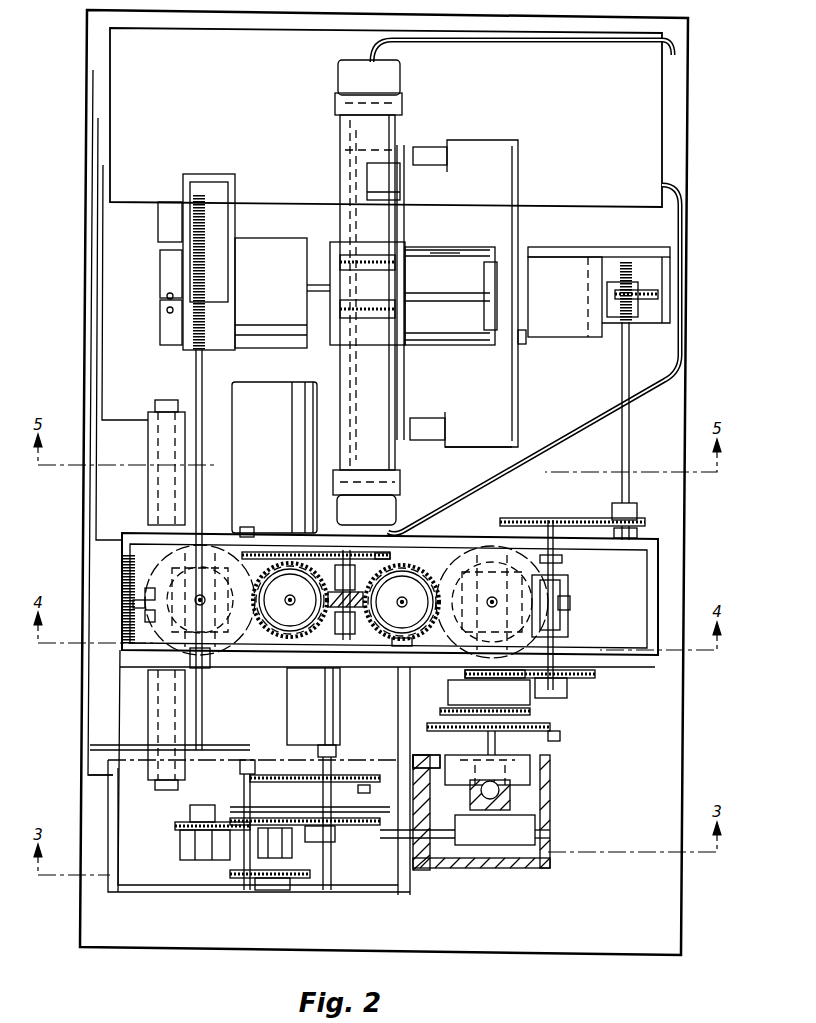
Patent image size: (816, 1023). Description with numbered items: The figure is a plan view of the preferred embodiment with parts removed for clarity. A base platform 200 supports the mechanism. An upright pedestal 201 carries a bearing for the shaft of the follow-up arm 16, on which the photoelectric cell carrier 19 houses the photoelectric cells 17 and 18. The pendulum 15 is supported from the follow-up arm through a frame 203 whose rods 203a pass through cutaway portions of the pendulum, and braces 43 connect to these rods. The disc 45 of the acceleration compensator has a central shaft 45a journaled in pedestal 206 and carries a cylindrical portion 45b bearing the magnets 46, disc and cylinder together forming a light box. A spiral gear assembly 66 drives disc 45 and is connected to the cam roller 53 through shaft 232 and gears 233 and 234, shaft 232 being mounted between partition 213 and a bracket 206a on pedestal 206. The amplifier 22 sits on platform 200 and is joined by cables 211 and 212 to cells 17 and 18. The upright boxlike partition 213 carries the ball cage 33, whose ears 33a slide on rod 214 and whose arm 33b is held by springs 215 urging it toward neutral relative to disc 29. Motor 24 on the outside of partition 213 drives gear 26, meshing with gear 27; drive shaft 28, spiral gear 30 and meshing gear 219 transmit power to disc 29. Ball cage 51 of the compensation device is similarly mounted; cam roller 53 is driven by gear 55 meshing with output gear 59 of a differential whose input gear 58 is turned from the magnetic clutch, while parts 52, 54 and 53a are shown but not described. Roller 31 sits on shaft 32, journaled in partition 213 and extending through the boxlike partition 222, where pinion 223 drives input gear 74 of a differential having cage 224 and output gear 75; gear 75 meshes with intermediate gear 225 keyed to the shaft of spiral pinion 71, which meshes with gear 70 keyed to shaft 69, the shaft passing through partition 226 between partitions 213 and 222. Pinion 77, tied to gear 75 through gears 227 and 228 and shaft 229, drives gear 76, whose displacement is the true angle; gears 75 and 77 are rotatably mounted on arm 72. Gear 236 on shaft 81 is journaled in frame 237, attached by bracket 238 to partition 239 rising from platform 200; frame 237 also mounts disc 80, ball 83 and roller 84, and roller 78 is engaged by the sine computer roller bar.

The base platform 200 is at (688, 160).
The amplifier 22 is at (114, 52).
The cable 211 is at (676, 52).
The cable 212 is at (660, 392).
The photoelectric cell 17 is at (355, 158).
The photoelectric cell carrier 19 is at (346, 372).
The photoelectric cell 18 is at (352, 426).
The pendulum 15 is at (410, 196).
The follow-up arm 16 is at (334, 250).
The upright pedestal 201 is at (268, 250).
The shaft 32 is at (196, 386).
The motor 24 is at (286, 368).
The frame 203 is at (500, 346).
The rods 203a is at (455, 300).
The disc 45 is at (520, 411).
The magnets 46 is at (430, 147).
The cylindrical portion 45b is at (498, 447).
The central shaft 45a is at (526, 343).
The pedestal 206 is at (568, 258).
The bracket 206a is at (642, 255).
The spiral gear assembly 66 is at (648, 320).
The shaft 232 is at (621, 376).
The gear 234 is at (522, 518).
The gear 233 is at (640, 522).
The upright boxlike partition 213 is at (122, 550).
The springs 215 is at (135, 630).
The rod 214 is at (135, 555).
The ears 33a is at (150, 618).
The arm 33b is at (150, 530).
The ball cage 33 is at (208, 583).
The roller 31 is at (248, 530).
The gear 26 is at (262, 552).
The spiral gear 30 is at (296, 630).
The disc 29 is at (276, 626).
The drive shaft 28 is at (352, 580).
The gear 27 is at (390, 556).
The gear 219 is at (385, 626).
The intermediate gear 225 is at (432, 625).
The braces 43 is at (398, 646).
The ball cage 51 is at (485, 546).
The wheel hub 52 is at (505, 626).
The cam roller 53 is at (568, 591).
The bearing 54 is at (565, 560).
The shaft collar 53a is at (570, 601).
The gear 55 is at (590, 676).
The output gear 59 is at (465, 672).
The input gear 58 is at (436, 724).
The gear 236 is at (562, 734).
The shaft 81 is at (500, 747).
The disc 80 is at (530, 766).
The frame 237 is at (552, 781).
The bracket 238 is at (428, 757).
The ball 83 is at (512, 801).
The roller 84 is at (512, 862).
The gear 70 is at (292, 698).
The partition 239 is at (398, 725).
The pinion 71 is at (336, 751).
The arm 72 is at (331, 888).
The pinion gear 77 is at (252, 774).
The gear 76 is at (350, 777).
The roller 78 is at (366, 793).
The shaft 229 is at (258, 808).
The input gear 74 is at (290, 840).
The output gear 75 is at (240, 823).
The pinion gear 223 is at (196, 822).
The cage 224 is at (205, 842).
The gear 228 is at (297, 880).
The gear 227 is at (270, 890).
The upright boxlike partition 222 is at (110, 875).
The shaft 69 is at (130, 745).
The partition 226 is at (95, 778).